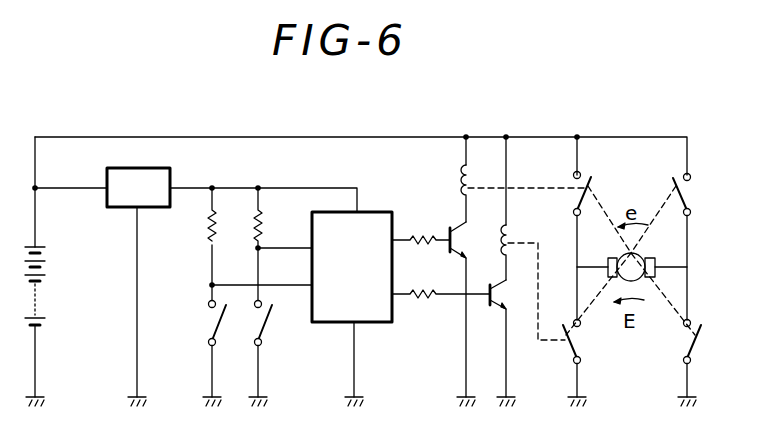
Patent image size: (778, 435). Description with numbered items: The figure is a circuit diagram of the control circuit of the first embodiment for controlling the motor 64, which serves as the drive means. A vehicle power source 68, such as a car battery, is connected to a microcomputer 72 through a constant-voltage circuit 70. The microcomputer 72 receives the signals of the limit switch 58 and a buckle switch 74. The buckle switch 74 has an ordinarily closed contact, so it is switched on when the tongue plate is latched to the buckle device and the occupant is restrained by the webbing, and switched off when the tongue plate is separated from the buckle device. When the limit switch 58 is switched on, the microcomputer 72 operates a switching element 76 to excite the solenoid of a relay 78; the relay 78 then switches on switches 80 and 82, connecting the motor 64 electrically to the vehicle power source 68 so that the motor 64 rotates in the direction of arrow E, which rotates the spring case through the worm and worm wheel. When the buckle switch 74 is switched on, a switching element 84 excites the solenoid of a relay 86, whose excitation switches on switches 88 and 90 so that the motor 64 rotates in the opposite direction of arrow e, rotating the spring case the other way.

The limit switch 58 is at (270, 330).
The motor 64 is at (645, 258).
The vehicle power source 68 is at (46, 265).
The constant-voltage circuit 70 is at (108, 172).
The microcomputer 72 is at (382, 325).
The buckle switch 74 is at (202, 333).
The switching element 76 is at (454, 225).
The relay 78 is at (459, 184).
The switch 80 is at (593, 183).
The switch 82 is at (698, 343).
The switching element 84 is at (492, 313).
The relay 86 is at (511, 240).
The switch 88 is at (580, 343).
The switch 90 is at (692, 192).